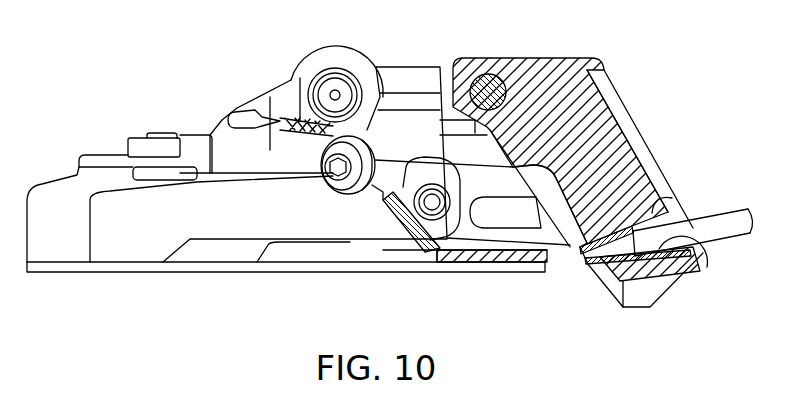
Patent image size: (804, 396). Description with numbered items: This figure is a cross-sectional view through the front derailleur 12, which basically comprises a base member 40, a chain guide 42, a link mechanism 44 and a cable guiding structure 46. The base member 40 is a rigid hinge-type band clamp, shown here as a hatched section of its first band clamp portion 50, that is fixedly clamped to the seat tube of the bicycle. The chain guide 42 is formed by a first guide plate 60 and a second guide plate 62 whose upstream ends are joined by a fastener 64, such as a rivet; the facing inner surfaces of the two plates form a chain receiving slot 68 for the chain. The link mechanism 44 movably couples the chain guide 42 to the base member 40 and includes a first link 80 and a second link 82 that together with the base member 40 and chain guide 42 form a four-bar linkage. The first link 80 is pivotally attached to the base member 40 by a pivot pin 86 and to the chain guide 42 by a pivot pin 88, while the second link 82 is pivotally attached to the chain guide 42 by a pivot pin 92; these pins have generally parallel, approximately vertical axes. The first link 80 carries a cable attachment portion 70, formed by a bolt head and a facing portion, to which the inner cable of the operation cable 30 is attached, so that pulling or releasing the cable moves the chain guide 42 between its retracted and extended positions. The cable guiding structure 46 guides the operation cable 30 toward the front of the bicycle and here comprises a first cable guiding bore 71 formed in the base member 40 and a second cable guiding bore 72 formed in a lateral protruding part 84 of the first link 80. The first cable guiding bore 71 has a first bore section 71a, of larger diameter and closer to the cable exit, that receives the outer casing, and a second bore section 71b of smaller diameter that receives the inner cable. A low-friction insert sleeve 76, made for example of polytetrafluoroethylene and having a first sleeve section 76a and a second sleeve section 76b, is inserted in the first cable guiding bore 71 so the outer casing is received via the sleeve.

The front derailleur 12 is at (390, 195).
The operation cable 30 is at (737, 203).
The base member 40 is at (630, 96).
The chain guide 42 is at (113, 273).
The link mechanism 44 is at (333, 207).
The cable guiding structure 46 is at (580, 305).
The first band clamp portion 50 is at (540, 57).
The first guide plate 60 is at (203, 273).
The second guide plate 62 is at (105, 153).
The fastener 64 is at (164, 135).
The chain receiving slot 68 is at (128, 223).
The cable attachment portion 70 is at (332, 188).
The first cable guiding bore 71 is at (635, 293).
The first bore section 71a is at (696, 255).
The second bore section 71b is at (620, 306).
The second cable guiding bore 72 is at (430, 273).
The insert sleeve 76 is at (667, 278).
The first sleeve section 76a is at (653, 199).
The second sleeve section 76b is at (638, 171).
The first link 80 is at (405, 80).
The second link 82 is at (502, 232).
The lateral protruding part 84 is at (397, 240).
The pivot pin 86 is at (488, 85).
The pivot pin 88 is at (329, 80).
The pivot pin 92 is at (425, 203).